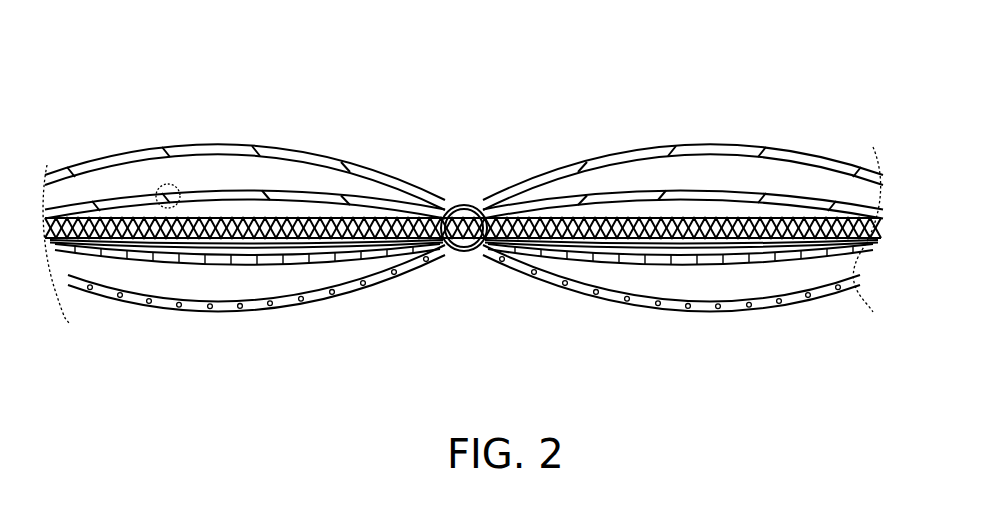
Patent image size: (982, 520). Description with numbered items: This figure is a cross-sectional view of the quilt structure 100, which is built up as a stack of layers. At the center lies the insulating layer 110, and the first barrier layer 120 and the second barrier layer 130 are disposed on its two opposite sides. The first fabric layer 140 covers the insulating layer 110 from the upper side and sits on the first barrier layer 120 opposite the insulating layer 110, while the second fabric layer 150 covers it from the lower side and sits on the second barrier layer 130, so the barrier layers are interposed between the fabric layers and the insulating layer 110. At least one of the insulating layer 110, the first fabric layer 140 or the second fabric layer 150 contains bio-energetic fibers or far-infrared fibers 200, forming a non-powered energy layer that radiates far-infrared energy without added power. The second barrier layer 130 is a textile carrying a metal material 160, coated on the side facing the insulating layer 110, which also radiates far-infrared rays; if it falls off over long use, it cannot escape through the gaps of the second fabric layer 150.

The quilt structure 100 is at (176, 52).
The insulating layer 110 is at (667, 230).
The first barrier layer 120 is at (333, 198).
The second barrier layer 130 is at (496, 266).
The first fabric layer 140 is at (263, 148).
The second fabric layer 150 is at (297, 310).
The metal material 160 is at (630, 272).
The bio-energetic fibers or far-infrared fibers 200 is at (162, 198).